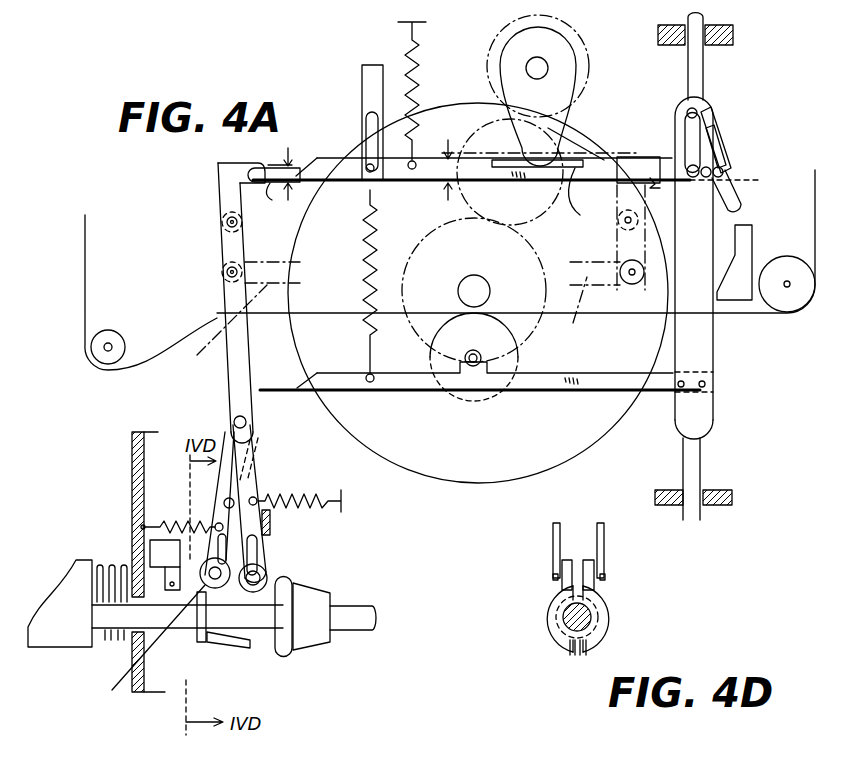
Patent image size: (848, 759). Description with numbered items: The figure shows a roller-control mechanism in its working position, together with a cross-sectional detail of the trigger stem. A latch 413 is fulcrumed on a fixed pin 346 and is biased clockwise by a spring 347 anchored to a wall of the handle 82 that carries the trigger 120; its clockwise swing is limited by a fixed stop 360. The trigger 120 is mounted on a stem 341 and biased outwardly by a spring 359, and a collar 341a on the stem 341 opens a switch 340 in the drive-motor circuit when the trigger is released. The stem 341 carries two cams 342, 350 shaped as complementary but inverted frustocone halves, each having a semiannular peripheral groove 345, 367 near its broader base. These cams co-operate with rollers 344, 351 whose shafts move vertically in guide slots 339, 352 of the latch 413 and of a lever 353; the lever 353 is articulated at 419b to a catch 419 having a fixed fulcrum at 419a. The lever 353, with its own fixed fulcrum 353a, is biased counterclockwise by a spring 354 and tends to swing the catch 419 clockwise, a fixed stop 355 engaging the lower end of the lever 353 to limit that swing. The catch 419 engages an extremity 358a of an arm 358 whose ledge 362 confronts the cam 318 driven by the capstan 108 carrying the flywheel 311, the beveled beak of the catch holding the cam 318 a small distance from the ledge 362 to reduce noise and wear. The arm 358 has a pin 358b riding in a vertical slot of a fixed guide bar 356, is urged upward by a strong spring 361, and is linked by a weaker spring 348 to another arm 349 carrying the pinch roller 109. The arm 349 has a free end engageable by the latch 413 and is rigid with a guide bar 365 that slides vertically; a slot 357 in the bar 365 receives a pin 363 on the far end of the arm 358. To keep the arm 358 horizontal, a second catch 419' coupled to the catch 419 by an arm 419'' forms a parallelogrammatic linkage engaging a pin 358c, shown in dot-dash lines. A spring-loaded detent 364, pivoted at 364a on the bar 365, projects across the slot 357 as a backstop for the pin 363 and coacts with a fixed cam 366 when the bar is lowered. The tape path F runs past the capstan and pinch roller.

In FIG. 4A, the flywheel 311 is at (445, 482).
In FIG. 4A, the capstan 108 is at (500, 258).
In FIG. 4A, the pinch roller 109 is at (500, 340).
In FIG. 4A, the arm 358 is at (600, 172).
In FIG. 4A, the ledge 362 is at (577, 200).
In FIG. 4A, the catch 419 is at (452, 288).
In FIG. 4A, the fixed fulcrum 419a is at (222, 218).
In FIG. 4A, the articulation 419b is at (222, 268).
In FIG. 4A, the extremity 358a is at (272, 206).
In FIG. 4A, the pin 358b is at (362, 180).
In FIG. 4A, the fixed guide bar 356 is at (368, 88).
In FIG. 4A, the spring 361 is at (418, 60).
In FIG. 4A, the spring 348 is at (366, 250).
In FIG. 4A, the cam 318 is at (565, 95).
In FIG. 4A, the slot 357 is at (680, 118).
In FIG. 4A, the guide bar 365 is at (700, 330).
In FIG. 4A, the spring-loaded detent 364 is at (712, 145).
In FIG. 4A, the pivot 364a is at (725, 160).
In FIG. 4A, the pin 363 is at (725, 182).
In FIG. 4A, the pin 358c is at (640, 158).
In FIG. 4A, the second catch 419' is at (607, 199).
In FIG. 4A, the arm 419'' is at (394, 327).
In FIG. 4A, the fixed cam 366 is at (748, 245).
In FIG. 4A, the tape F is at (85, 280).
In FIG. 4A, the arm 349 is at (410, 380).
In FIG. 4A, the lever 353 is at (232, 372).
In FIG. 4D, the lever 353 is at (604, 537).
In FIG. 4A, the fixed fulcrum 353a is at (234, 420).
In FIG. 4A, the latch 413 is at (268, 437).
In FIG. 4D, the latch 413 is at (553, 535).
In FIG. 4A, the fixed stop 360 is at (262, 455).
In FIG. 4A, the spring 354 is at (318, 472).
In FIG. 4A, the fixed stop 355 is at (275, 520).
In FIG. 4A, the guide slot 352 is at (262, 555).
In FIG. 4A, the roller 351 is at (268, 578).
In FIG. 4D, the roller 351 is at (592, 567).
In FIG. 4A, the handle 82 is at (130, 468).
In FIG. 4A, the fixed pin 346 is at (222, 503).
In FIG. 4A, the guide slot 339 is at (140, 528).
In FIG. 4A, the spring 347 is at (212, 540).
In FIG. 4A, the switch 340 is at (162, 548).
In FIG. 4A, the trigger 120 is at (78, 595).
In FIG. 4A, the spring 359 is at (100, 640).
In FIG. 4A, the stem 341 is at (372, 622).
In FIG. 4D, the stem 341 is at (565, 608).
In FIG. 4A, the collar 341a is at (192, 632).
In FIG. 4A, the semiannular peripheral groove 345 is at (232, 640).
In FIG. 4D, the semiannular peripheral groove 345 is at (552, 593).
In FIG. 4A, the cam 342 is at (245, 648).
In FIG. 4D, the cam 342 is at (565, 640).
In FIG. 4A, the roller 344 is at (139, 646).
In FIG. 4D, the roller 344 is at (560, 567).
In FIG. 4A, the cam 350 is at (312, 635).
In FIG. 4D, the cam 350 is at (598, 628).
In FIG. 4A, the semiannular peripheral groove 367 is at (285, 655).